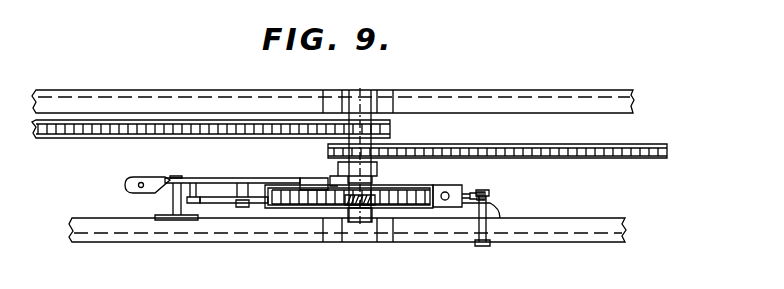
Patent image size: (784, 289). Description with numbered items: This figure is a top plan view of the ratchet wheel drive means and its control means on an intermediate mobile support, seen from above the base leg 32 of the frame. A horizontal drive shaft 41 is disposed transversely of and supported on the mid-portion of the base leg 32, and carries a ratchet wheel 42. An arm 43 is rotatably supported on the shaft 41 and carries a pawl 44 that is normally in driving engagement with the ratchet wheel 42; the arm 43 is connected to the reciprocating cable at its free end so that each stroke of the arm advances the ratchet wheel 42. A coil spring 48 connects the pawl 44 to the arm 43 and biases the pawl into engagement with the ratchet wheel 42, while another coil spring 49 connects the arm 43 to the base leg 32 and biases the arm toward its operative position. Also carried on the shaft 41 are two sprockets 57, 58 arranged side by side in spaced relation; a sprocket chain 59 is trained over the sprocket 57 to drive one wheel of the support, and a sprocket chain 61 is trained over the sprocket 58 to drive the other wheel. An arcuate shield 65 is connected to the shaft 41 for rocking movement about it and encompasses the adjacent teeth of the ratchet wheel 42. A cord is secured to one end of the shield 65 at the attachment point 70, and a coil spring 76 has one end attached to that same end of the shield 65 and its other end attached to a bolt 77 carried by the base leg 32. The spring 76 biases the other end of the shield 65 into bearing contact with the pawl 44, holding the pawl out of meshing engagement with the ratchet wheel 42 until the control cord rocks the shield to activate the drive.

The base leg 32 is at (548, 232).
The horizontal drive shaft 41 is at (356, 222).
The ratchet wheel 42 is at (403, 208).
The arm 43 is at (229, 162).
The pawl 44 is at (258, 207).
The coil spring 48 is at (208, 200).
The coil spring 49 is at (177, 176).
The sprocket 57 is at (393, 128).
The sprocket 58 is at (328, 150).
The sprocket chain 59 is at (222, 127).
The sprocket chain 61 is at (576, 158).
The arcuate shield 65 is at (412, 183).
The cord attachment point 70 is at (462, 190).
The coil spring 76 is at (490, 205).
The bolt 77 is at (484, 246).